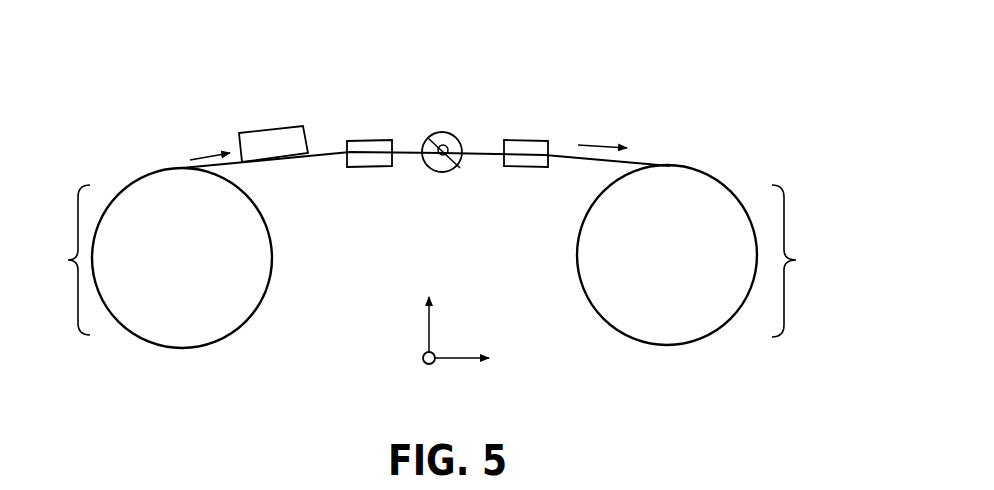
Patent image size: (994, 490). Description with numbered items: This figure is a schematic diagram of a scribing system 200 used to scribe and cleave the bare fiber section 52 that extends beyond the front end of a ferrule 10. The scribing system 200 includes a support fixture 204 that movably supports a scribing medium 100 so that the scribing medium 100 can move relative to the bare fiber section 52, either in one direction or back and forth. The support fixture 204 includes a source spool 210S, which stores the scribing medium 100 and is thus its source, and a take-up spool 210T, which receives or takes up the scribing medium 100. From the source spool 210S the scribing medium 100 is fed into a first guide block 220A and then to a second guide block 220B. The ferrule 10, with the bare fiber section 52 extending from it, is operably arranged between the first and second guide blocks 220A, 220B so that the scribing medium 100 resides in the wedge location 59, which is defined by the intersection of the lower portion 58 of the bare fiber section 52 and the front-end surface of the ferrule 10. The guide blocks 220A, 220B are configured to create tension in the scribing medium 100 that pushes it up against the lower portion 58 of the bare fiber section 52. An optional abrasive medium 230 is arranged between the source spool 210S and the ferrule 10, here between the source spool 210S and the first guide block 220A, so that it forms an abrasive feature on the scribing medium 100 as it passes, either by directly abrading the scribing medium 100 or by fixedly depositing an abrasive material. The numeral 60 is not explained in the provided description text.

The scribing system 200 is at (405, 194).
The abrasive medium 230 is at (268, 130).
The first guide block 220A is at (373, 141).
The second guide block 220B is at (527, 140).
The scribing medium 100 is at (323, 157).
The ferrule 10 is at (459, 120).
The bare fiber section 52 is at (428, 137).
The lower portion 58 is at (437, 173).
The wedge location 59 is at (457, 151).
The roller 60 is at (447, 172).
The support fixture 204 is at (405, 261).
The source spool 210S is at (182, 258).
The take-up spool 210T is at (667, 255).